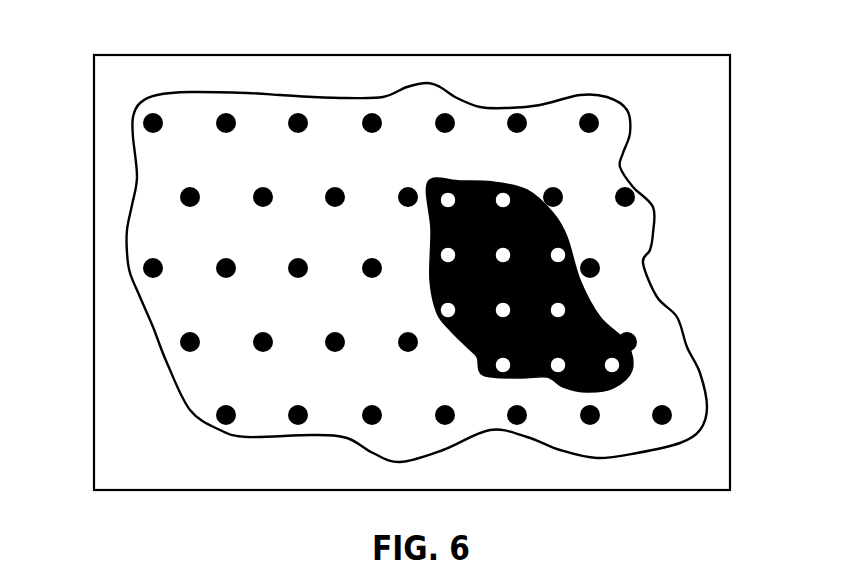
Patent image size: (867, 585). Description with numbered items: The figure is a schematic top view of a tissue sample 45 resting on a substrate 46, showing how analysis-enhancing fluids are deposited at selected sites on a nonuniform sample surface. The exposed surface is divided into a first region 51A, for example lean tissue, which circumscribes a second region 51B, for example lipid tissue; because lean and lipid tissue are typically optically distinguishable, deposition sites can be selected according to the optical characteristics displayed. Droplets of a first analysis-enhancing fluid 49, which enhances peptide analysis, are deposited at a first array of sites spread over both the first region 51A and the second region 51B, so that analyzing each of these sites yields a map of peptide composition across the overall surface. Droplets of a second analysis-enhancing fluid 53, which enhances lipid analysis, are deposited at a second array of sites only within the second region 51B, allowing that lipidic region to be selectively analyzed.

The tissue sample 45 is at (127, 252).
The substrate 46 is at (717, 123).
The droplets of first analysis-enhancing fluid 49 is at (444, 113).
The first region 51A is at (153, 175).
The second region 51B is at (557, 220).
The droplets of second analysis-enhancing fluid 53 is at (448, 190).